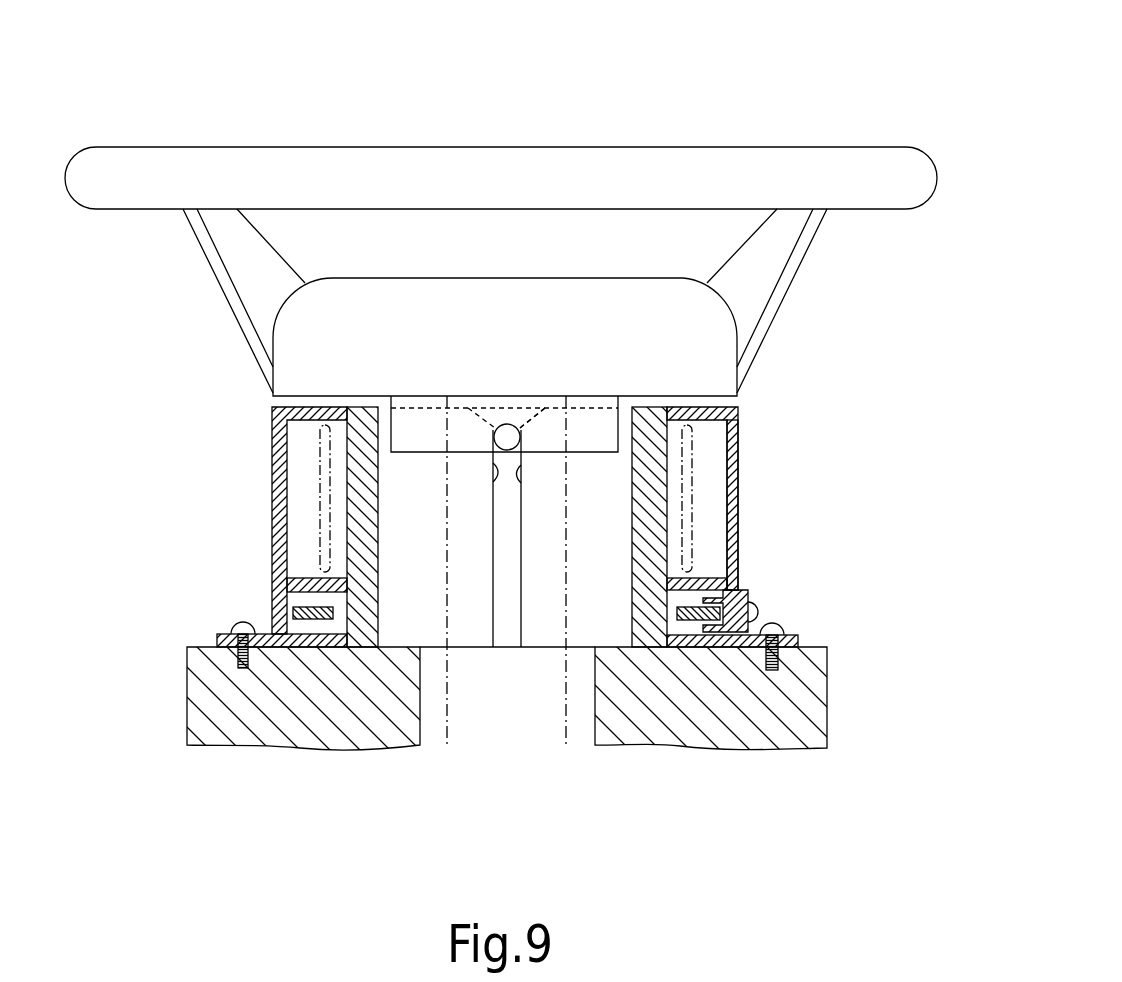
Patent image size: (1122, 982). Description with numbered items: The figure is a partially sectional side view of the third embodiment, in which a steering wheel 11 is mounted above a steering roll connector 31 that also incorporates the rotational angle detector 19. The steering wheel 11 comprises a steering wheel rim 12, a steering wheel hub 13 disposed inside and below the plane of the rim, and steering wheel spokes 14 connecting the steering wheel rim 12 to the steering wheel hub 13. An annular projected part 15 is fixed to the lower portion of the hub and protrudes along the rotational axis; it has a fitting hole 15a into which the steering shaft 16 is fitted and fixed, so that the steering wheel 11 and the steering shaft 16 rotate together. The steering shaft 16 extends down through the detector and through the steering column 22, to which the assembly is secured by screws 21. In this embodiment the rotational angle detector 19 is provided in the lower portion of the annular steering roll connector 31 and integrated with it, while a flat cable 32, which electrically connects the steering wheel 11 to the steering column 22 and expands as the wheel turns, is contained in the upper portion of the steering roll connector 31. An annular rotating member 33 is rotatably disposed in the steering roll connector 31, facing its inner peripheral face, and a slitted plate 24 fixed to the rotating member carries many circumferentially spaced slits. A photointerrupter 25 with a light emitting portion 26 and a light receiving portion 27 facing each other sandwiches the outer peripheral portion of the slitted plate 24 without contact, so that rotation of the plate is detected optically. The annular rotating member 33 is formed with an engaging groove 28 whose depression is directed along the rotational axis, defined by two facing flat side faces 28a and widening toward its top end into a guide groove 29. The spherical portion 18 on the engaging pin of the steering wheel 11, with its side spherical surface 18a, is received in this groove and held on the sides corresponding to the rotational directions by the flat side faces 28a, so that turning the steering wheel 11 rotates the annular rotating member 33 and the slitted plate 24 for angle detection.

The steering wheel 11 is at (501, 209).
The steering wheel rim 12 is at (922, 210).
The steering wheel hub 13 is at (400, 278).
The steering wheel spokes 14 is at (277, 248).
The annular projected part 15 is at (390, 428).
The fitting hole 15a is at (453, 397).
The steering shaft 16 is at (440, 718).
The spherical portion 18 is at (500, 421).
The side spherical surface 18a is at (513, 423).
The rotational angle detector 19 is at (777, 598).
The screws 21 is at (232, 622).
The steering column 22 is at (187, 678).
The slitted plate 24 is at (297, 603).
The photointerrupter 25 is at (703, 602).
The light emitting portion 26 is at (740, 645).
The light receiving portion 27 is at (717, 592).
The engaging groove 28 is at (506, 498).
The flat side faces 28a is at (493, 470).
The guide groove 29 is at (537, 420).
The steering roll connector 31 is at (738, 480).
The flat cable 32 is at (313, 473).
The annular rotating member 33 is at (737, 408).